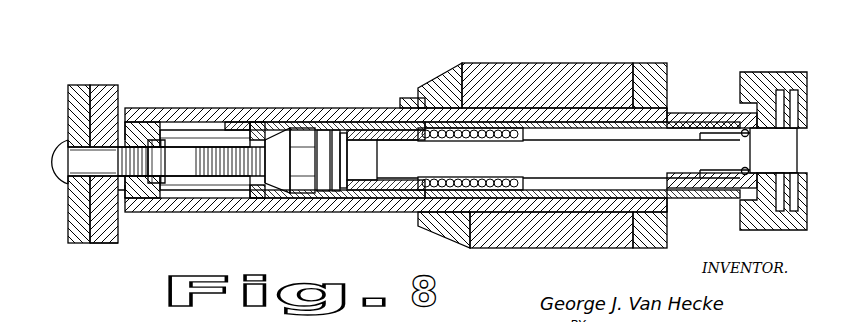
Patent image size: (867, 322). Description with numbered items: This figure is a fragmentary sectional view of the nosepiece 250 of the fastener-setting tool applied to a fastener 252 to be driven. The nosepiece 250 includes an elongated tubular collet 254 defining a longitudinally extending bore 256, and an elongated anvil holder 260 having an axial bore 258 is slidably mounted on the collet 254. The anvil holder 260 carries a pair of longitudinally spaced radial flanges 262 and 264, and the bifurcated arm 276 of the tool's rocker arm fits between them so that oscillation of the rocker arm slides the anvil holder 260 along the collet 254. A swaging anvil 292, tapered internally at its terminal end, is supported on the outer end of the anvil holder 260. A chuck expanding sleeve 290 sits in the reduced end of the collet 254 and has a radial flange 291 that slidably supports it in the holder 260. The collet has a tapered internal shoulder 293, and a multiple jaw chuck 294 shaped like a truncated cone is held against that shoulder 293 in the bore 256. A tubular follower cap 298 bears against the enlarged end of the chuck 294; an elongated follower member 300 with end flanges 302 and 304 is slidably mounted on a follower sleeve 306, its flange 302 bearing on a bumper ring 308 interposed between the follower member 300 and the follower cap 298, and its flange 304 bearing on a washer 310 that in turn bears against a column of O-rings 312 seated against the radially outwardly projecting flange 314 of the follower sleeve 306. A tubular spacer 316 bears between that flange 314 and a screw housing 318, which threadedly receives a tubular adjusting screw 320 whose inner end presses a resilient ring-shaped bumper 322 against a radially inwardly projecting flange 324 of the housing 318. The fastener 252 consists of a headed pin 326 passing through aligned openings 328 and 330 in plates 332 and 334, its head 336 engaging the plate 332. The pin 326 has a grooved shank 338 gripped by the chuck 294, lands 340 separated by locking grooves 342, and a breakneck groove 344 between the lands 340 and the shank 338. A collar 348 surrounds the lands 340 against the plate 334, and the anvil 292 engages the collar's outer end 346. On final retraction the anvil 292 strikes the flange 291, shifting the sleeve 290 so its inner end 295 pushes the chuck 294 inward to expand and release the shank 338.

The nosepiece 250 is at (219, 222).
The fastener 252 is at (62, 140).
The tubular collet 254 is at (280, 147).
The bore 256 is at (358, 130).
The axial bore 258 is at (433, 88).
The anvil holder 260 is at (335, 108).
The flange 262 is at (463, 70).
The flange 264 is at (657, 63).
The bifurcated arm 276 is at (533, 67).
The chuck expanding sleeve 290 is at (240, 147).
The radial flange 291 is at (235, 198).
The swaging anvil 292 is at (150, 160).
The tapered internal shoulder 293 is at (313, 193).
The multiple jaw chuck 294 is at (277, 150).
The inner end 295 is at (273, 190).
The tubular follower cap 298 is at (325, 191).
The follower member 300 is at (365, 150).
The flange portion 302 is at (360, 122).
The flange portion 304 is at (410, 98).
The follower sleeve 306 is at (447, 141).
The bumper ring 308 is at (362, 160).
The washer 310 is at (397, 159).
The column of O-rings 312 is at (490, 141).
The radially outwardly projecting flange 314 is at (530, 143).
The tubular spacer 316 is at (667, 127).
The screw housing 318 is at (740, 130).
The tubular adjusting screw 320 is at (763, 127).
The resilient ring-shaped bumper 322 is at (737, 143).
The radially inwardly projecting flange 324 is at (735, 175).
The headed pin 326 is at (80, 150).
The opening 328 is at (72, 198).
The opening 330 is at (100, 148).
The plate 332 is at (80, 240).
The plate 334 is at (107, 240).
The head 336 is at (60, 172).
The shank portion 338 is at (230, 122).
The lands 340 is at (144, 140).
The locking grooves 342 is at (140, 147).
The breakneck groove 344 is at (148, 176).
The outer end 346 is at (200, 130).
The collar 348 is at (120, 190).